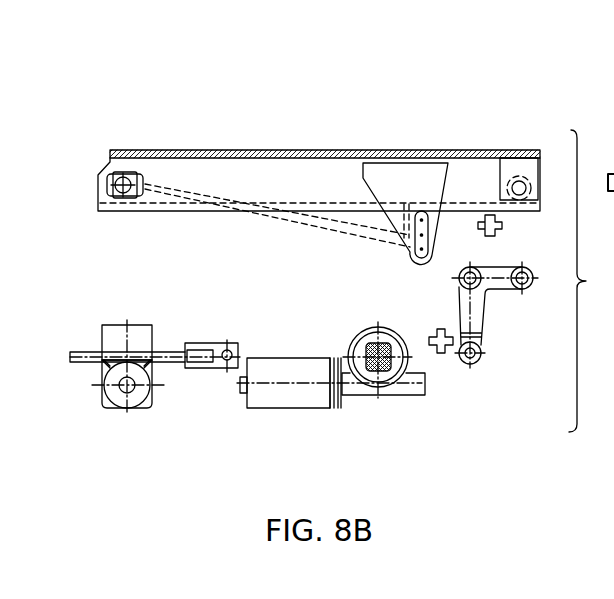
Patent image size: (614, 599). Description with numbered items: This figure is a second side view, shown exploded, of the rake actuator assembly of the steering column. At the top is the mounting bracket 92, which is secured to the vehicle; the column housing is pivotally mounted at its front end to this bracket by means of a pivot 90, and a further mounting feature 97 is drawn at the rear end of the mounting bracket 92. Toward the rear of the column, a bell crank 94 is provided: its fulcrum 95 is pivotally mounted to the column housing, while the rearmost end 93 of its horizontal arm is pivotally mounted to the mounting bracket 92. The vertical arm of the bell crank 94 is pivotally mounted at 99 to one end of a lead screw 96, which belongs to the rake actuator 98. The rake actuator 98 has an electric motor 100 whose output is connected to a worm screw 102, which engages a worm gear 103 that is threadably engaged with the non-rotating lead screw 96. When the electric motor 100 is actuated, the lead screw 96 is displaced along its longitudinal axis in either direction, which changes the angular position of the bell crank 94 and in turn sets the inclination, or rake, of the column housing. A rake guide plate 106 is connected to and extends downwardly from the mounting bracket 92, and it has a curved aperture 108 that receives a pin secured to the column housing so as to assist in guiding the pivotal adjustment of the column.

The pivot 90 is at (130, 172).
The mounting bracket 92 is at (491, 128).
The rearmost end of the horizontal arm 93 is at (531, 266).
The bell crank 94 is at (481, 308).
The fulcrum 95 is at (467, 266).
The lead screw 96 is at (167, 363).
The bearing block 97 is at (521, 178).
The rake actuator 98 is at (140, 427).
The pivotal mounting 99 is at (480, 358).
The electric motor 100 is at (288, 409).
The worm screw 102 is at (358, 393).
The worm gear 103 is at (362, 343).
The rake guide plate 106 is at (402, 178).
The curved aperture 108 is at (412, 245).